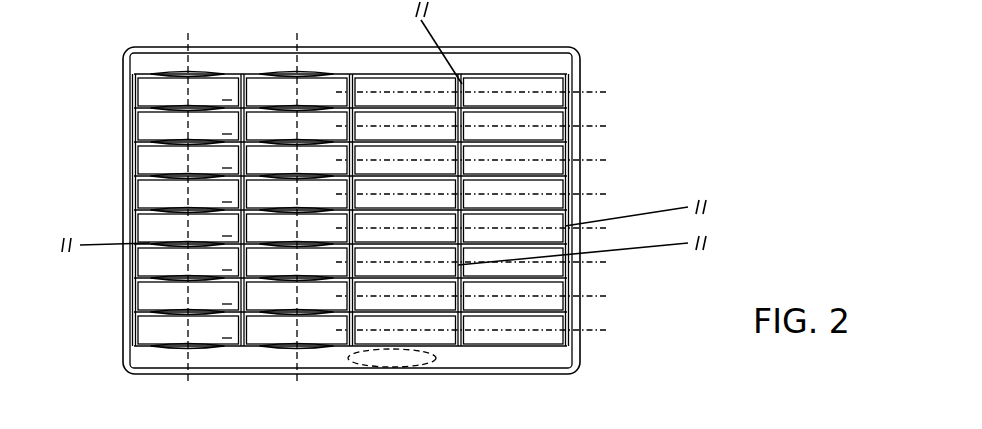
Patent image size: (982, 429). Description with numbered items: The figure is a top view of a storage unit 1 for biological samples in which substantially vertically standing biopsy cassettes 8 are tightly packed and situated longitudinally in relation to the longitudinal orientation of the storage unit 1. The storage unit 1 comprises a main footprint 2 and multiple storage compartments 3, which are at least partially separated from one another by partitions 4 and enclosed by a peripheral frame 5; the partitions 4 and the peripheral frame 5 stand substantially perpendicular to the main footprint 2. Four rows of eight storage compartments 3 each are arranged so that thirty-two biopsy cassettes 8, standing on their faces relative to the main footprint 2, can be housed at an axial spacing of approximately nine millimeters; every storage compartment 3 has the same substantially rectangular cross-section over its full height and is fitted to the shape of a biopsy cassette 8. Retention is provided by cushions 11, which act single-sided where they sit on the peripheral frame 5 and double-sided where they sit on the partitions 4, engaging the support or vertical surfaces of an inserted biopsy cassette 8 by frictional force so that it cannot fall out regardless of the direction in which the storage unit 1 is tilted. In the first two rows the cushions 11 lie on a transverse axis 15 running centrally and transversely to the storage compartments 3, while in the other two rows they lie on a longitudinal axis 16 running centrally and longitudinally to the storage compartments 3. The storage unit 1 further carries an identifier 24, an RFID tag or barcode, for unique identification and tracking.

The storage unit 1 is at (722, 81).
The main footprint 2 is at (587, 356).
The storage compartment 3 is at (556, 321).
The partition 4 is at (349, 88).
The peripheral frame 5 is at (128, 121).
The biopsy cassette 8 is at (528, 152).
The cushion 11 is at (168, 79).
The transverse axis 15 is at (185, 39).
The longitudinal axis 16 is at (607, 125).
The identifier 24 is at (396, 362).